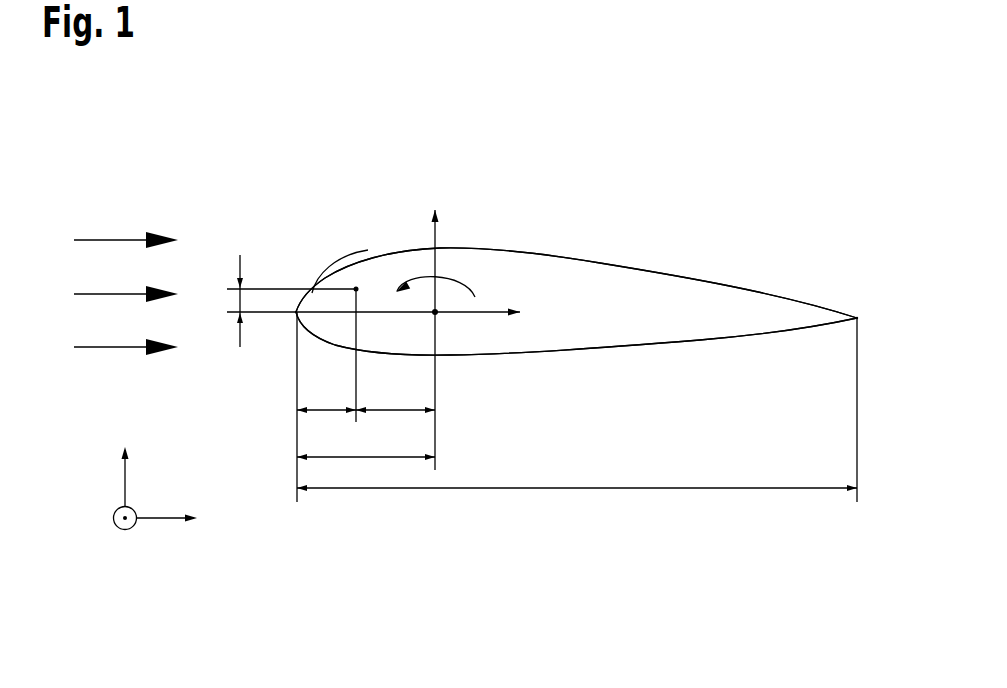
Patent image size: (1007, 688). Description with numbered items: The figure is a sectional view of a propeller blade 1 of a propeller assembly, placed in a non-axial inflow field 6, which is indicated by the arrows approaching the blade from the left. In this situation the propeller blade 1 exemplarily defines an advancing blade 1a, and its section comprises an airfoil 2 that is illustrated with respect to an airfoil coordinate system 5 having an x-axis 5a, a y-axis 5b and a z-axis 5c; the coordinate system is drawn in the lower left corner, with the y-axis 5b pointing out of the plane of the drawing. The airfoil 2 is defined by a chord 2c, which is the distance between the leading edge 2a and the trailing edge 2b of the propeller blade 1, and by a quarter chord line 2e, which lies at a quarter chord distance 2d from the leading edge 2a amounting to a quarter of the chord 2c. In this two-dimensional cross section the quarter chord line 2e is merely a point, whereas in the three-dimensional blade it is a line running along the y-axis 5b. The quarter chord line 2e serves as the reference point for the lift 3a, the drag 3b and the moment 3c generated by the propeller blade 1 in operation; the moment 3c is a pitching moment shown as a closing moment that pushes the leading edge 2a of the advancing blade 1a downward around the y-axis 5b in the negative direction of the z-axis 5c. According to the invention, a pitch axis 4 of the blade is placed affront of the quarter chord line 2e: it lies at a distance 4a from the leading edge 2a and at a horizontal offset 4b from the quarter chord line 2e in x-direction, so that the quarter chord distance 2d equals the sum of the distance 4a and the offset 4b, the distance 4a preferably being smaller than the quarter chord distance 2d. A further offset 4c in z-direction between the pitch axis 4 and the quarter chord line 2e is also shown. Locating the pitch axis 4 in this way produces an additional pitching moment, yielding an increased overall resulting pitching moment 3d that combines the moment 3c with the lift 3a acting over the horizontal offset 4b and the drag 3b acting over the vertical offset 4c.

The propeller blade 1 is at (667, 210).
The advancing blade 1a is at (748, 322).
The airfoil 2 is at (724, 278).
The leading edge 2a is at (292, 319).
The trailing edge 2b is at (864, 312).
The chord 2c is at (565, 488).
The quarter chord distance 2d is at (353, 457).
The quarter chord line 2e is at (444, 320).
The lift 3a is at (437, 240).
The drag 3b is at (485, 313).
The moment 3c is at (458, 278).
The resulting pitching moment 3d is at (335, 260).
The pitch axis 4 is at (365, 270).
The distance 4a is at (327, 412).
The offset 4b is at (395, 412).
The offset 4c is at (240, 302).
The airfoil coordinate system 5 is at (115, 496).
The x-axis 5a is at (162, 519).
The y-axis 5b is at (114, 508).
The z-axis 5c is at (125, 485).
The non-axial inflow field 6 is at (82, 216).